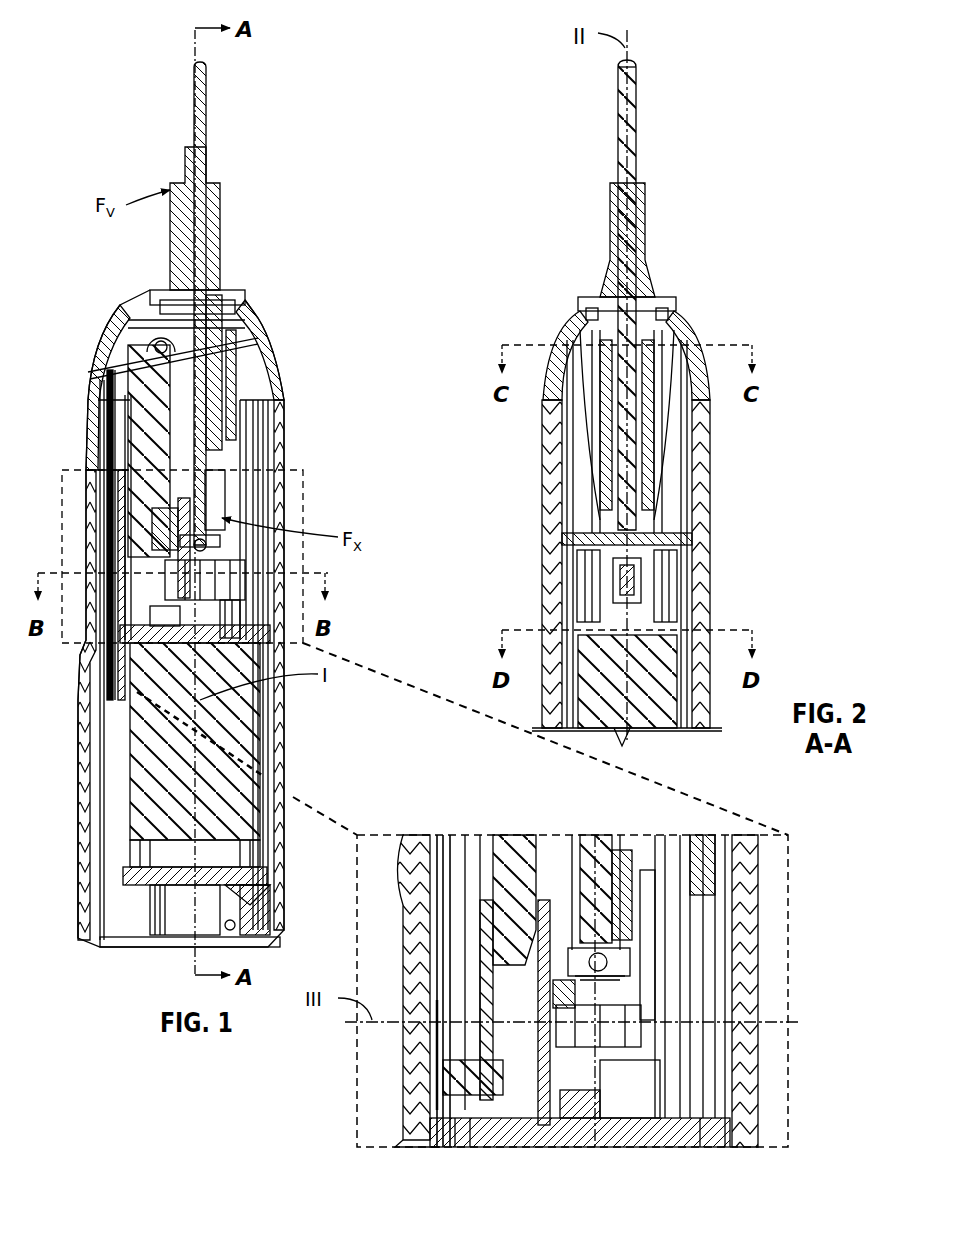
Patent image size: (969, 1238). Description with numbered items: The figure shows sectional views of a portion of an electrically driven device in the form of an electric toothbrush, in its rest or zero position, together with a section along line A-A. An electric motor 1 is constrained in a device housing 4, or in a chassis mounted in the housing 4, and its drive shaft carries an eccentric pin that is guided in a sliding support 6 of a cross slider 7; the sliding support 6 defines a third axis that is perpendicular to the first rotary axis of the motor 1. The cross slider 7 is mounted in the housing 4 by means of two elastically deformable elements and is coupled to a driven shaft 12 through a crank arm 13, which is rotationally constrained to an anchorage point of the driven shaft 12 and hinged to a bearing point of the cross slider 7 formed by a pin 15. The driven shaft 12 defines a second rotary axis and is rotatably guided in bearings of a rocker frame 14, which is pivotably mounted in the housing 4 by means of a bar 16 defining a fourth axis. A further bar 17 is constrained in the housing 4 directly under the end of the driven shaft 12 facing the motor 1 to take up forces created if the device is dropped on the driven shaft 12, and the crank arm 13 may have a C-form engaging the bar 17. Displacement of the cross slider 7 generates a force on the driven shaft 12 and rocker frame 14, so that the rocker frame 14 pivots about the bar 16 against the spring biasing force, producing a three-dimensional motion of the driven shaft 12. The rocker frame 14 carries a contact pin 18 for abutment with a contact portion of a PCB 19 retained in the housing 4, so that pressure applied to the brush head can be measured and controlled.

In FIG. 1, the electric motor 1 is at (250, 730).
In FIG. 1, the device housing 4 is at (83, 797).
In FIG. 1, the sliding support 6 is at (523, 1030).
In FIG. 1, the cross slider 7 is at (520, 990).
In FIG. 1, the driven shaft 12 is at (198, 128).
In FIG. 2, the driven shaft 12 is at (633, 90).
In FIG. 1, the crank arm 13 is at (636, 870).
In FIG. 1, the rocker frame 14 is at (222, 218).
In FIG. 2, the rocker frame 14 is at (612, 210).
In FIG. 1, the pin 15 is at (545, 905).
In FIG. 1, the bar 16 is at (158, 345).
In FIG. 1, the further bar 17 is at (602, 970).
In FIG. 1, the contact pin 18 is at (482, 1093).
In FIG. 1, the PCB 19 is at (433, 1065).